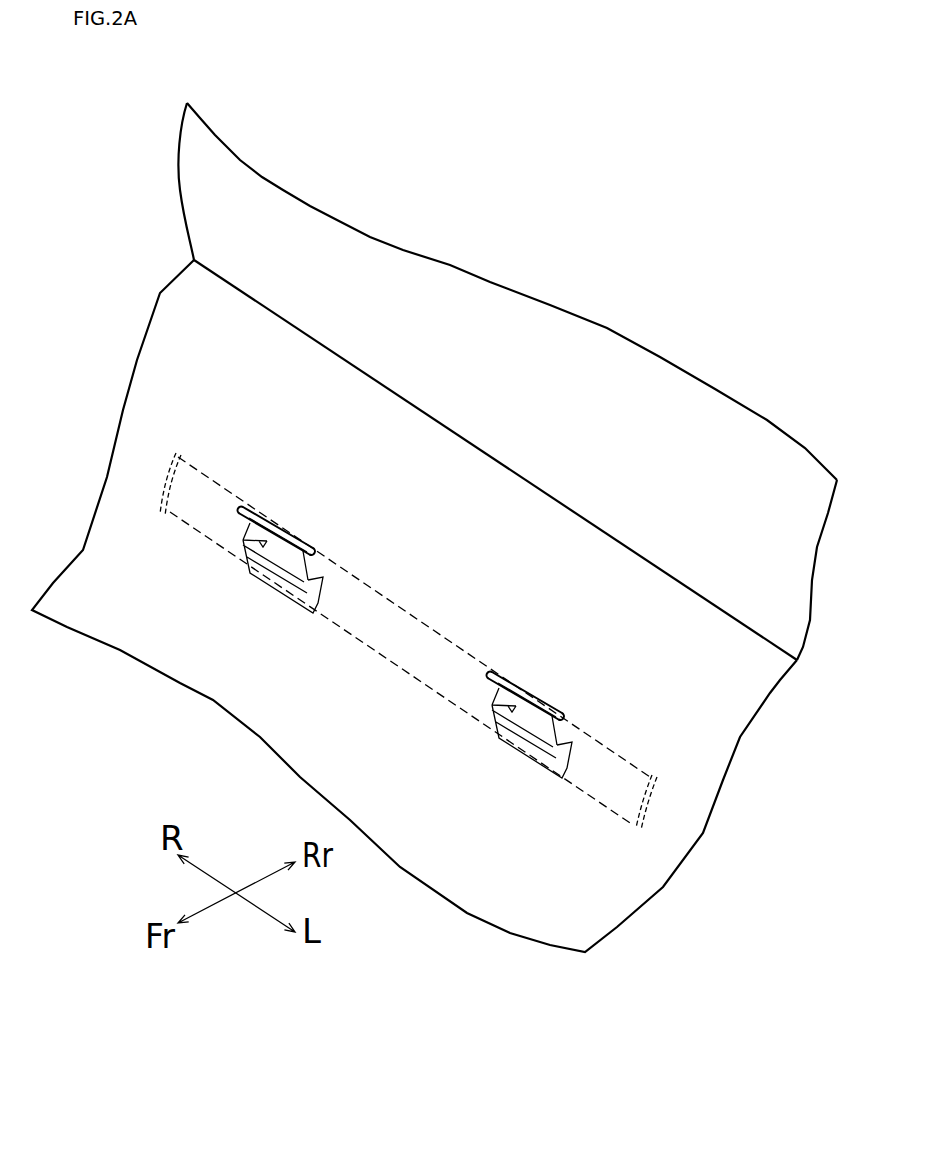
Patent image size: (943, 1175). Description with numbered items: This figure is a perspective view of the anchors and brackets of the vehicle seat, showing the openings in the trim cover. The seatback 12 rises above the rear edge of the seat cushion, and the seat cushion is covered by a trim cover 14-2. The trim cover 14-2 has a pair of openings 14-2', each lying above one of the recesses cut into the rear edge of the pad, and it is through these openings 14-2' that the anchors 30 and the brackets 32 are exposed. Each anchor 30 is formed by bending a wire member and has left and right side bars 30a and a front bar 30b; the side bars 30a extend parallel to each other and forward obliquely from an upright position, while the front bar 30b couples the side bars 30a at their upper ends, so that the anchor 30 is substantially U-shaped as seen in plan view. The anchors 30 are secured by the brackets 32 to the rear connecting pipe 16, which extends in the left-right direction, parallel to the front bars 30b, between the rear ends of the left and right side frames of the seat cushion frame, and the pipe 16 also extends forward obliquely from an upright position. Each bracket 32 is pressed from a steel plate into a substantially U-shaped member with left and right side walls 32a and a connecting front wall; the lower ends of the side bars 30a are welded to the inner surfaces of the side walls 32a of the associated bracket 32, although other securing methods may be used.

The seatback 12 is at (512, 313).
The trim cover 14-2 is at (414, 606).
The opening 14-2' is at (312, 762).
The rear connecting pipe 16 is at (650, 803).
The anchor 30 is at (444, 599).
The side bar 30a is at (250, 525).
The front bar 30b is at (247, 512).
The bracket 32 is at (278, 618).
The side wall 32a is at (570, 740).